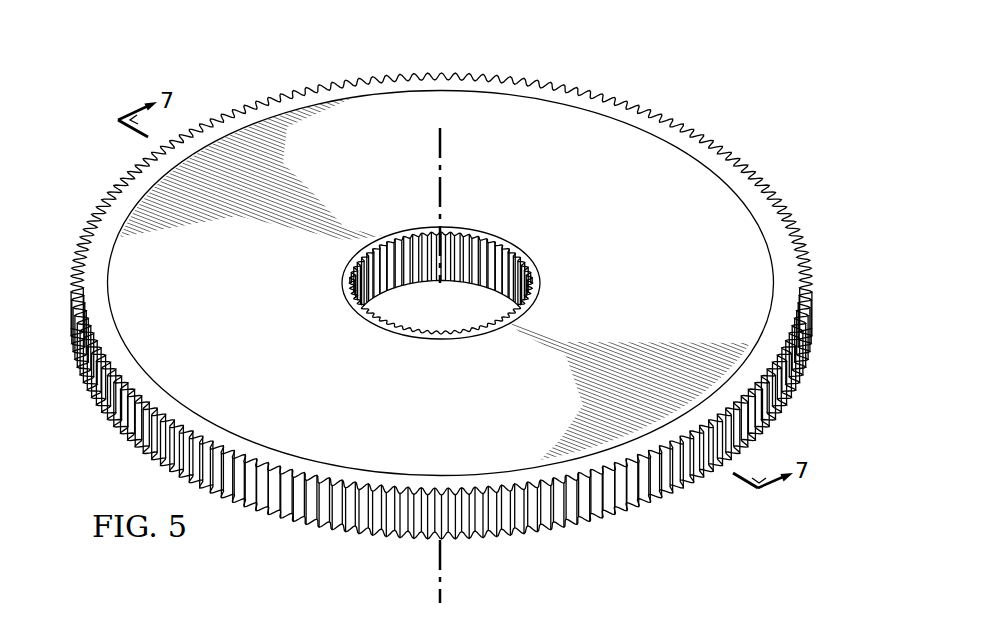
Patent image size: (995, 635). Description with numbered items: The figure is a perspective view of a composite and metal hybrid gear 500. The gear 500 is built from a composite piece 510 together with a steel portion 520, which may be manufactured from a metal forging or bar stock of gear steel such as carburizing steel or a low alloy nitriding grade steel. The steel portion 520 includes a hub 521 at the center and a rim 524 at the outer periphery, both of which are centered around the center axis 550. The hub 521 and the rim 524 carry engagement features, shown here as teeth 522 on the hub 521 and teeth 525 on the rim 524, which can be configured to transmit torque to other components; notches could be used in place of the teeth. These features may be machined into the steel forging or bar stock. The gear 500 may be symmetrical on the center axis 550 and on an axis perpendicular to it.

The gear 500 is at (712, 100).
The composite piece 510 is at (435, 415).
The steel portion 520 is at (645, 120).
The hub 521 is at (523, 262).
The teeth 522 is at (458, 240).
The rim 524 is at (502, 87).
The teeth 525 is at (253, 507).
The center axis 550 is at (437, 143).